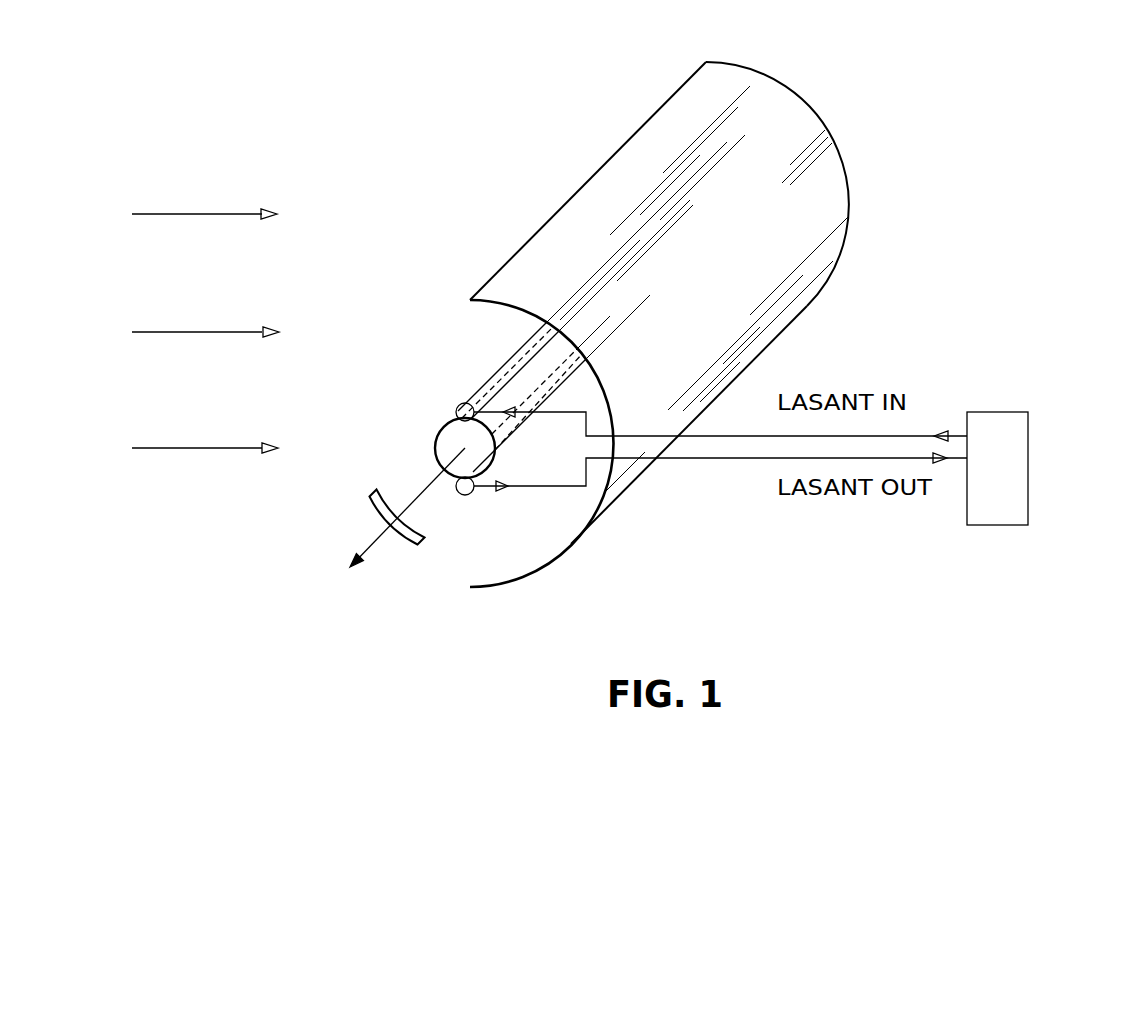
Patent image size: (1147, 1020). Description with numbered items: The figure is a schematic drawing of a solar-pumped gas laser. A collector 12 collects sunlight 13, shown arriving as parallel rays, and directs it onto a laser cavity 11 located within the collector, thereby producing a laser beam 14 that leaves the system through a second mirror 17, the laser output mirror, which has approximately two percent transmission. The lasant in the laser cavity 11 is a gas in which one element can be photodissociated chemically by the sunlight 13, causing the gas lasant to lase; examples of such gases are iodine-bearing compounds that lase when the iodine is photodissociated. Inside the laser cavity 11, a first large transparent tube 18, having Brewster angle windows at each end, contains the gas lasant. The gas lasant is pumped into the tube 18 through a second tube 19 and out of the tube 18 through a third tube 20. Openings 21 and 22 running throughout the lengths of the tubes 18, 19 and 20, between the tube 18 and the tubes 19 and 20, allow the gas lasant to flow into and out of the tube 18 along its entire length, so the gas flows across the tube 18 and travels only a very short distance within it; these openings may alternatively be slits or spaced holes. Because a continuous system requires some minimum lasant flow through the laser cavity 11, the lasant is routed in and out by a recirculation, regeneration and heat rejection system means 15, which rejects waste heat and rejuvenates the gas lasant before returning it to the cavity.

The laser cavity 11 is at (556, 361).
The collector 12 is at (828, 176).
The sunlight 13 is at (208, 333).
The laser beam 14 is at (376, 542).
The recirculation, regeneration and heat rejection system means 15 is at (1001, 411).
The second mirror 17 is at (382, 488).
The first large transparent tube 18 is at (533, 360).
The second tube 19 is at (490, 369).
The third tube 20 is at (462, 494).
The openings 21 is at (457, 403).
The openings 22 is at (512, 436).